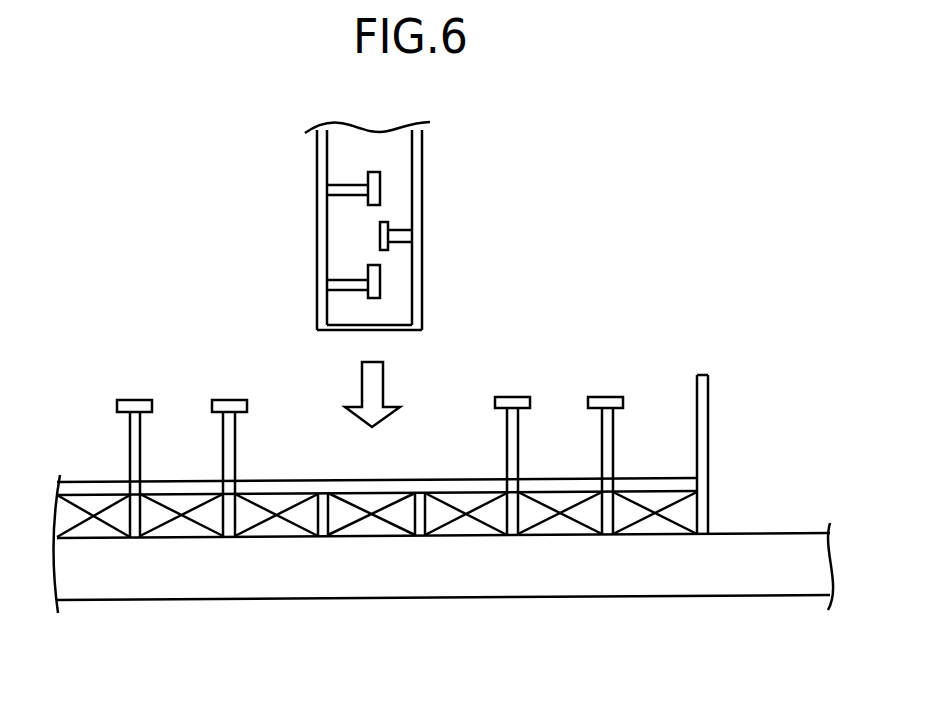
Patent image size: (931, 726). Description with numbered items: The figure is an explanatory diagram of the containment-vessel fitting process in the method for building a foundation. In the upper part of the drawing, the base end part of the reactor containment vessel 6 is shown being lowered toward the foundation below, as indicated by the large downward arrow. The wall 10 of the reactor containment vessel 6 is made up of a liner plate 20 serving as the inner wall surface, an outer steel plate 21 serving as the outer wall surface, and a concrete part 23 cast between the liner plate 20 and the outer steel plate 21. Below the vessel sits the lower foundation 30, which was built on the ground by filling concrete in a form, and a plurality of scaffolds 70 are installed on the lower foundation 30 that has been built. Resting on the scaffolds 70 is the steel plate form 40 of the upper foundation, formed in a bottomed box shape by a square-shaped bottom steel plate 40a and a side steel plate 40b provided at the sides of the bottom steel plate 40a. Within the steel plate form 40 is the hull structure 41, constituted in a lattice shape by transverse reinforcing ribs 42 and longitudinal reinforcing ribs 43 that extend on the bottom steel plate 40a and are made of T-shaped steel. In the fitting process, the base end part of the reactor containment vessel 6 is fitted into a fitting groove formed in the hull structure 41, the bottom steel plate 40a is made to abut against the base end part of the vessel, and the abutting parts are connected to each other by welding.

The reactor containment vessel 6 is at (449, 131).
The wall 10 is at (441, 193).
The liner plate 20 is at (323, 230).
The outer steel plate 21 is at (423, 267).
The concrete part 23 is at (361, 250).
The lower foundation 30 is at (570, 608).
The steel plate form 40 is at (710, 445).
The bottom steel plate 40a is at (467, 489).
The side steel plate 40b is at (703, 468).
The hull structure 41 is at (655, 422).
The transverse reinforcing ribs 42 is at (225, 443).
The longitudinal reinforcing ribs 43 is at (386, 450).
The scaffolds 70 is at (610, 513).